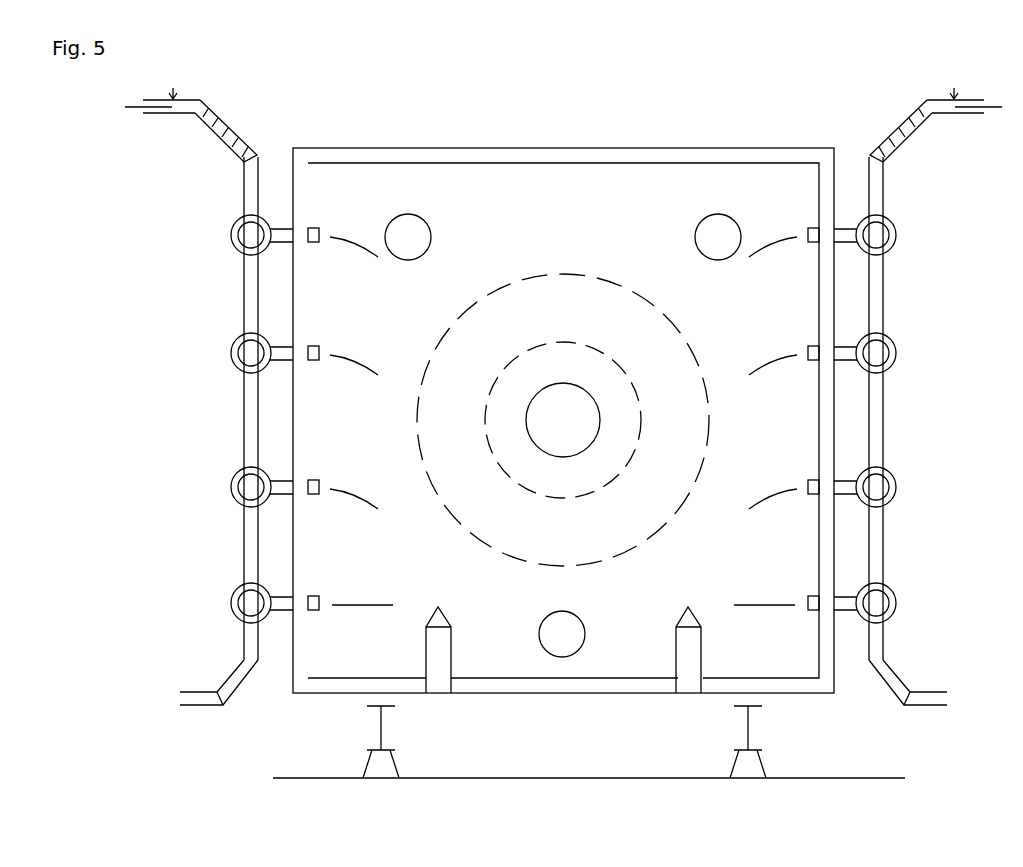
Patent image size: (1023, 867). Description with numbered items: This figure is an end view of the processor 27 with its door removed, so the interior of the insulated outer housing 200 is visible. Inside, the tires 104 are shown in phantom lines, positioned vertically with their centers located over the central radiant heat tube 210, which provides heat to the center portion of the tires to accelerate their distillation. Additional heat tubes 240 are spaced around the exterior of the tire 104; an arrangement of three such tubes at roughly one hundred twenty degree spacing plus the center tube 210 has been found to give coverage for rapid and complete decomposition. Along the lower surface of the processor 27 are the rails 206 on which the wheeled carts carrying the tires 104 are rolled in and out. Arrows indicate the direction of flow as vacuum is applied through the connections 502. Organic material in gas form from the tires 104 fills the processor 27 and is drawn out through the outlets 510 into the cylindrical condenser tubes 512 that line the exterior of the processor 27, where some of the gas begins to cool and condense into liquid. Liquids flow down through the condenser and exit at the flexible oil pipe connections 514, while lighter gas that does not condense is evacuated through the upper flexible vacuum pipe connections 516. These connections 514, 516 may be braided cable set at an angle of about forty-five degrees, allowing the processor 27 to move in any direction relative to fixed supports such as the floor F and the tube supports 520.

The insulated outer housing 200 is at (636, 155).
The tires 104 is at (672, 322).
The center heat tube 210 is at (553, 400).
The heat tubes 240 is at (418, 243).
The rails 206 is at (680, 615).
The outlets 510 is at (315, 345).
The cylindrical condenser tubes 512 is at (231, 230).
The upper flexible vacuum pipe connections 516 is at (225, 125).
The connections 502 is at (190, 115).
The tube supports 520 is at (175, 88).
The flexible oil pipe connections 514 is at (212, 690).
The processor 27 is at (455, 84).
The floor F is at (870, 778).